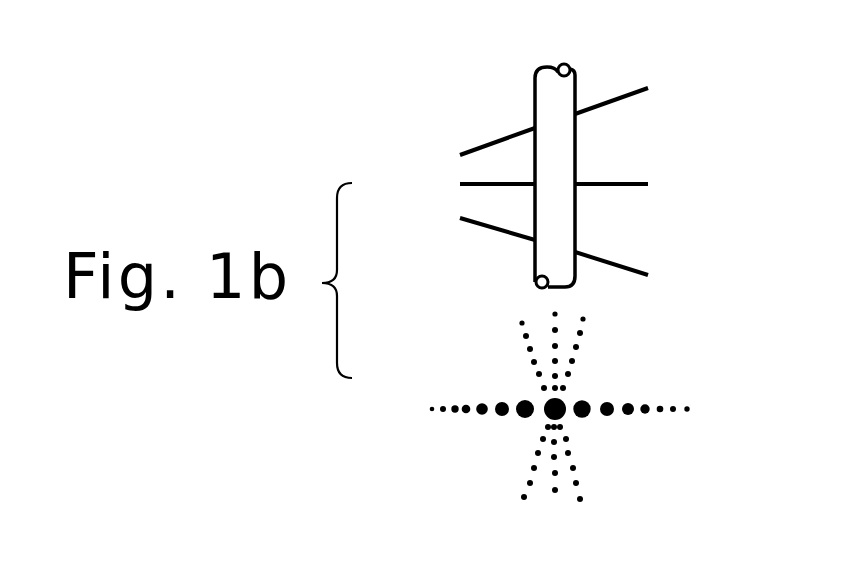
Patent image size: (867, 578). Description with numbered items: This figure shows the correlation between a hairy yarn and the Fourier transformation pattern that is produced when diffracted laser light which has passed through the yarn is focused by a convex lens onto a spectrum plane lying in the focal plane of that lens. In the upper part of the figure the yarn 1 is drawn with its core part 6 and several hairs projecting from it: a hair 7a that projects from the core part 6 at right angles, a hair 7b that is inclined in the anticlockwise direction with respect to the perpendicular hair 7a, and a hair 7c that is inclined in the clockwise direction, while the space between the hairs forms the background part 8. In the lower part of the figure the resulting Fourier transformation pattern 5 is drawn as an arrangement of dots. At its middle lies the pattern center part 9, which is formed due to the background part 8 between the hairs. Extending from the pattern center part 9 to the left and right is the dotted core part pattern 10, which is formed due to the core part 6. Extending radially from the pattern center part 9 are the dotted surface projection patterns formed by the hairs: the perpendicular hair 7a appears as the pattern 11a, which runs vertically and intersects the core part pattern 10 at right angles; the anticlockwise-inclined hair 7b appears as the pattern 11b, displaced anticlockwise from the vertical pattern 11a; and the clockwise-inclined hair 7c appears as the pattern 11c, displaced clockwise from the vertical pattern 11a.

The yarn 1 is at (584, 63).
The core part 6 is at (536, 88).
The hair 7a is at (630, 182).
The hair 7b is at (622, 93).
The hair 7c is at (500, 232).
The background part 8 is at (620, 222).
The Fourier transformation pattern 5 is at (573, 438).
The pattern center part 9 is at (547, 414).
The core part pattern 10 is at (467, 406).
The pattern 11a is at (555, 506).
The pattern 11b is at (579, 484).
The pattern 11c is at (525, 487).